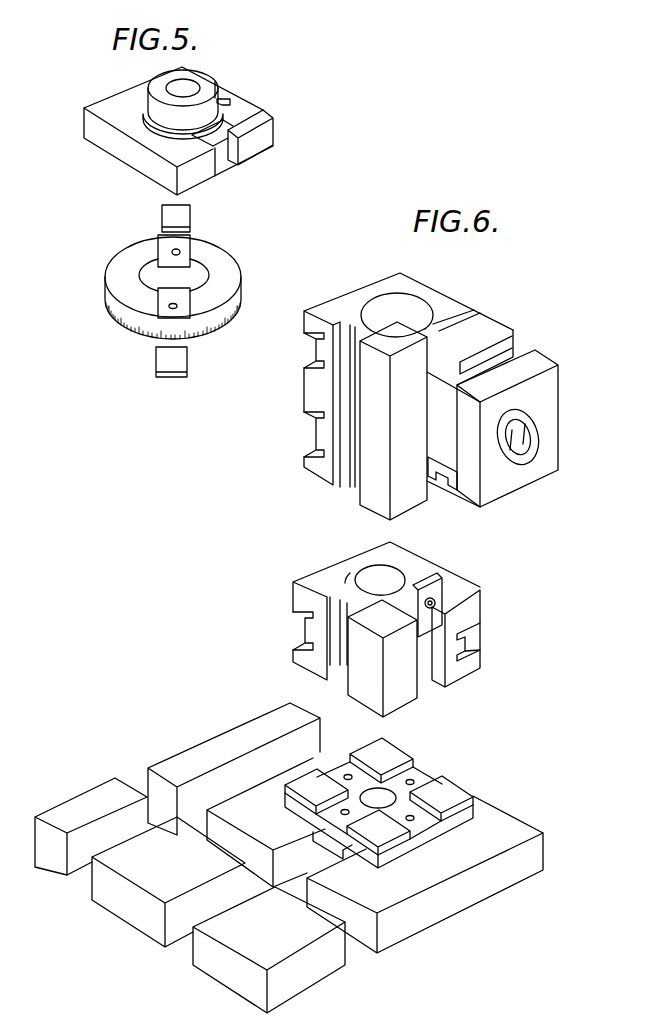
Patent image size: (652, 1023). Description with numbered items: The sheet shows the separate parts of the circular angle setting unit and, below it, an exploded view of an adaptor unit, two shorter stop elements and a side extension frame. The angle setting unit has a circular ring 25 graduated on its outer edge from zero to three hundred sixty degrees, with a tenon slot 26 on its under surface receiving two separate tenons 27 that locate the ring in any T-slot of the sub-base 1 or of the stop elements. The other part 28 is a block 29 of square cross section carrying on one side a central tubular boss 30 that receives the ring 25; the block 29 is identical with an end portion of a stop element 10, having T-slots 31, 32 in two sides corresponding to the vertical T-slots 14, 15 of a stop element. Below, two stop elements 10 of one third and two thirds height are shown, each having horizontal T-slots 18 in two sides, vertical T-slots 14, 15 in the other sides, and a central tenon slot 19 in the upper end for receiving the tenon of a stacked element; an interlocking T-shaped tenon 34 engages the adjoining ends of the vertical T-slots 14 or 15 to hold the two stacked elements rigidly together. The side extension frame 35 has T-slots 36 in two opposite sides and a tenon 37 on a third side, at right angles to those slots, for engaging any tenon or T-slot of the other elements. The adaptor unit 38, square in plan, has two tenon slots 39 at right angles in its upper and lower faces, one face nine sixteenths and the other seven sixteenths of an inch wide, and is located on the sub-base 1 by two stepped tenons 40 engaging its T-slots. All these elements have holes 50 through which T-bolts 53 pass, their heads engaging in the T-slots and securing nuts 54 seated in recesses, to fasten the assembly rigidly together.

In FIG. 6, the sub-base 1 is at (483, 882).
In FIG. 6, the stop element 10 is at (292, 597).
In FIG. 6, the vertical T-slot 14 is at (422, 687).
In FIG. 6, the vertical T-slot 15 is at (327, 655).
In FIG. 6, the horizontal T-slots 18 is at (467, 635).
In FIG. 6, the tenon slot 19 is at (437, 580).
In FIG. 5, the circular ring 25 is at (220, 273).
In FIG. 5, the tenon slot 26 is at (180, 251).
In FIG. 5, the tenons 27 is at (156, 360).
In FIG. 5, the other part of angle setting unit 28 is at (217, 80).
In FIG. 5, the block 29 is at (263, 132).
In FIG. 5, the tubular boss 30 is at (232, 103).
In FIG. 5, the T-slot 31 is at (215, 152).
In FIG. 5, the T-slot 32 is at (207, 110).
In FIG. 6, the T-shaped tenon 34 is at (440, 582).
In FIG. 6, the side extension frame 35 is at (547, 387).
In FIG. 6, the T-slots 36 is at (443, 487).
In FIG. 6, the tenon 37 is at (490, 323).
In FIG. 6, the adaptor unit 38 is at (447, 788).
In FIG. 6, the tenon slots 39 is at (418, 847).
In FIG. 6, the tenons 40 is at (330, 858).
In FIG. 5, the holes 50 is at (187, 85).
In FIG. 6, the T-bolts 53 is at (522, 437).
In FIG. 6, the securing nuts 54 is at (537, 433).